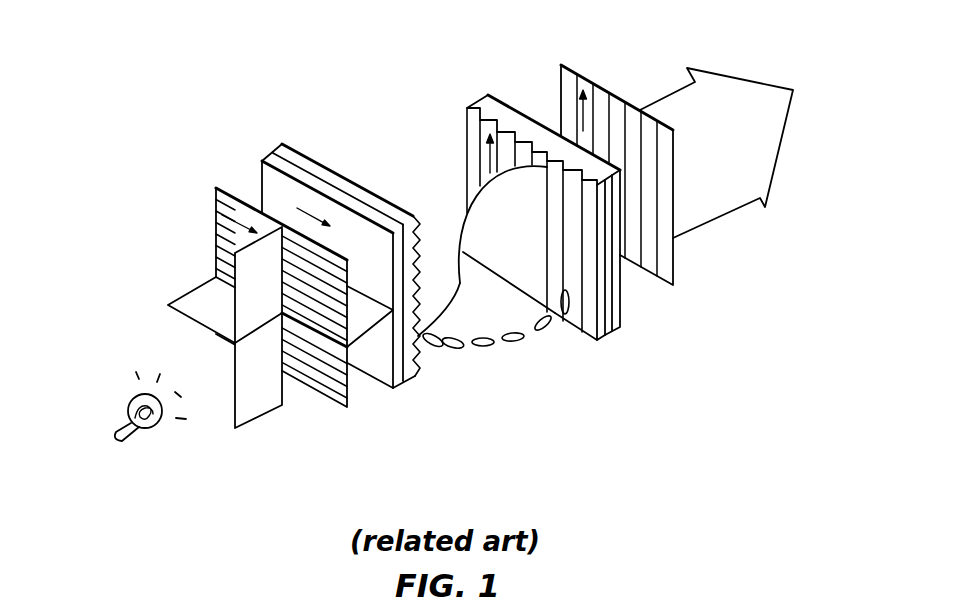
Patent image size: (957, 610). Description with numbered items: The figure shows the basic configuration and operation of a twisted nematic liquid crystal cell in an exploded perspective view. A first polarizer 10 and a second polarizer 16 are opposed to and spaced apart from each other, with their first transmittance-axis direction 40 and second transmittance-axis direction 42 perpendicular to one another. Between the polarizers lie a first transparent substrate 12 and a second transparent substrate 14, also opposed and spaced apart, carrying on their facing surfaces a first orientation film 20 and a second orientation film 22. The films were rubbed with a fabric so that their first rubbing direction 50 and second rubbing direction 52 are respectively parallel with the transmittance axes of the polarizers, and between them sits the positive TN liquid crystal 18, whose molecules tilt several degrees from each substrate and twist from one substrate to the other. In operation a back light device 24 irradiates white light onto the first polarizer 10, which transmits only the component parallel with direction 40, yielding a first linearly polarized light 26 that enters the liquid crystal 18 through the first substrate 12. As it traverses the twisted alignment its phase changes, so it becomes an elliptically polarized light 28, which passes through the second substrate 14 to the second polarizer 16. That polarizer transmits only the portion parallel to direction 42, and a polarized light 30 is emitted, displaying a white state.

The first polarizer 10 is at (216, 206).
The first transparent substrate 12 is at (408, 386).
The second transparent substrate 14 is at (622, 326).
The second polarizer 16 is at (668, 243).
The positive TN liquid crystal 18 is at (510, 346).
The first orientation film 20 is at (337, 180).
The second orientation film 22 is at (603, 306).
The back light device 24 is at (132, 390).
The first linearly polarized light 26 is at (363, 332).
The elliptically polarized light 28 is at (464, 250).
The polarized light 30 is at (746, 80).
The first transmittance-axis direction 40 is at (234, 213).
The second transmittance-axis direction 42 is at (595, 92).
The first rubbing direction 50 is at (303, 208).
The second rubbing direction 52 is at (494, 133).